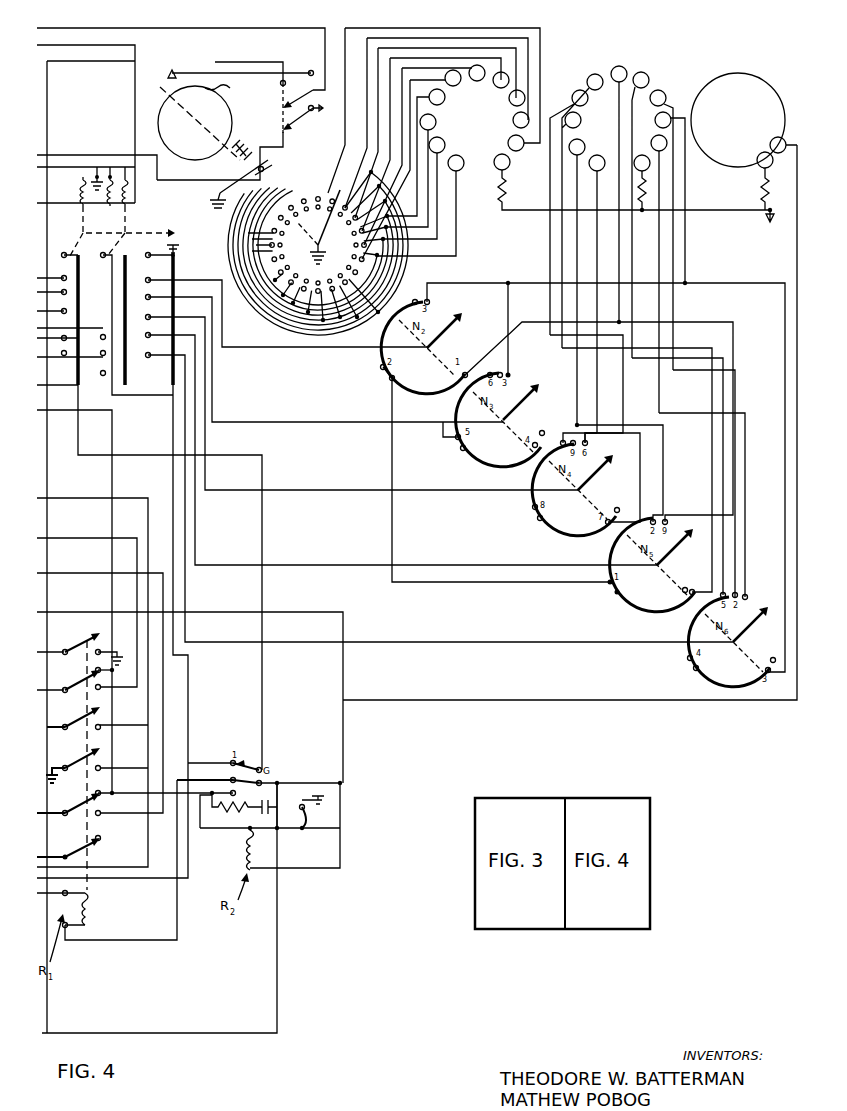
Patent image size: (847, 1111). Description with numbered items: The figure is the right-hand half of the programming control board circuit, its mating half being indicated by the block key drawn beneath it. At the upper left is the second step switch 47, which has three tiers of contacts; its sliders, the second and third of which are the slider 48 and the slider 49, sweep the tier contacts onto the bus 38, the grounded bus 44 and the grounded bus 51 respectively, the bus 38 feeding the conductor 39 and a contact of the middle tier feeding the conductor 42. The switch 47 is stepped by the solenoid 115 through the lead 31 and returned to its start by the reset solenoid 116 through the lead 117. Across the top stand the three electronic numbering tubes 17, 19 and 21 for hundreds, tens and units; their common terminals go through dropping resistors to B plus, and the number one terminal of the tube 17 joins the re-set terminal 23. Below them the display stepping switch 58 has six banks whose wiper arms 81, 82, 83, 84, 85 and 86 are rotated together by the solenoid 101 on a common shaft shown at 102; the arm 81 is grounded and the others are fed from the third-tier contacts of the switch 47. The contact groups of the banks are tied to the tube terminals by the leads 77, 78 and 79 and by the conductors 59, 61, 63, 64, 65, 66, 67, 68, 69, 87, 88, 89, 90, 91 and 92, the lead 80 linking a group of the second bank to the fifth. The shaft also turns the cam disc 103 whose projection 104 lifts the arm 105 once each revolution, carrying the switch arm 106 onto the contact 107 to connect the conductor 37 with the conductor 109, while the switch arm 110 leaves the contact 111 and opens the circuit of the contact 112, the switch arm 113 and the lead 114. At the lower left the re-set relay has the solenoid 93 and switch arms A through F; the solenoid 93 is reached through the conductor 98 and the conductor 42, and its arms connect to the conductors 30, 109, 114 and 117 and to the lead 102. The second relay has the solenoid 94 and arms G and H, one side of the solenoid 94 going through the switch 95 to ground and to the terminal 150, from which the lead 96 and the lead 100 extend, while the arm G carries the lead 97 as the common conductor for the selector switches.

The electronic numbering tube 17 is at (747, 128).
The electronic numbering tube 19 is at (624, 133).
The electronic numbering tube 21 is at (485, 131).
The re-set terminal 23 is at (50, 612).
The conductor 30 is at (78, 412).
The lead 31 is at (137, 47).
The conductor 37 is at (204, 27).
The bus 38 is at (80, 302).
The conductor 39 is at (264, 692).
The conductor 42 is at (50, 390).
The bus 44 is at (123, 318).
The step switch 47 is at (80, 280).
The slider 48 is at (130, 240).
The slider 49 is at (176, 260).
The bus 51 is at (175, 377).
The stepping switch 58 is at (442, 451).
The lead 59 is at (685, 233).
The conductor 61 is at (488, 283).
The conductor 63 is at (510, 308).
The conductor 64 is at (785, 574).
The conductor 65 is at (619, 262).
The conductor 66 is at (688, 413).
The conductor 67 is at (632, 303).
The conductor 68 is at (733, 480).
The conductor 69 is at (622, 242).
The lead 77 is at (345, 98).
The lead 78 is at (366, 122).
The lead 79 is at (484, 348).
The lead 80 is at (393, 414).
The wiper arm 81 is at (326, 233).
The wiper arm 82 is at (440, 342).
The wiper arm 83 is at (522, 422).
The wiper arm 84 is at (600, 490).
The wiper arm 85 is at (678, 565).
The wiper arm 86 is at (760, 645).
The conductor 87 is at (608, 393).
The conductor 88 is at (550, 246).
The conductor 89 is at (562, 265).
The conductor 90 is at (577, 222).
The conductor 91 is at (663, 474).
The conductor 92 is at (712, 474).
The solenoid 93 is at (92, 910).
The solenoid 94 is at (246, 860).
The switch 95 is at (312, 825).
The lead 96 is at (128, 1033).
The lead 97 is at (168, 880).
The conductor 98 is at (128, 940).
The lead 100 is at (200, 692).
The solenoid 101 is at (246, 148).
The lead 102 is at (86, 186).
The cam disc 103 is at (158, 117).
The projection 104 is at (231, 89).
The arm 105 is at (215, 62).
The switch arm 106 is at (288, 104).
The contact 107 is at (283, 80).
The conductor 109 is at (48, 110).
The switch arm 110 is at (288, 121).
The contact 111 is at (280, 135).
The contact 112 is at (263, 166).
The switch arm 113 is at (236, 184).
The lead 114 is at (55, 155).
The solenoid 115 is at (125, 178).
The reset solenoid 116 is at (80, 195).
The lead 117 is at (132, 498).
The terminal 150 is at (248, 830).